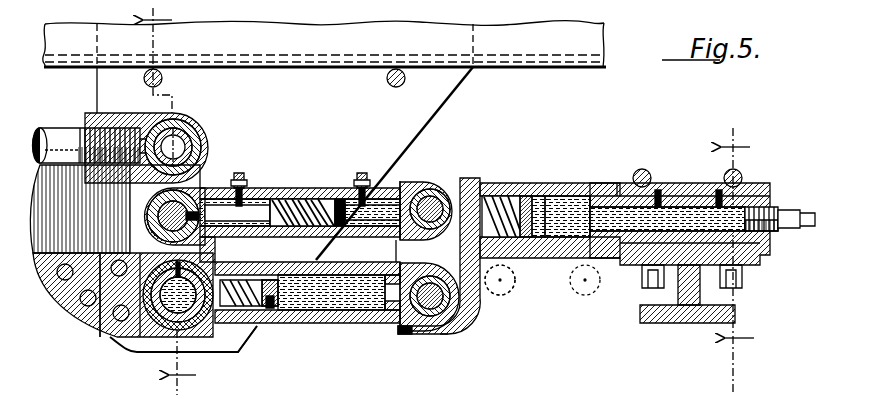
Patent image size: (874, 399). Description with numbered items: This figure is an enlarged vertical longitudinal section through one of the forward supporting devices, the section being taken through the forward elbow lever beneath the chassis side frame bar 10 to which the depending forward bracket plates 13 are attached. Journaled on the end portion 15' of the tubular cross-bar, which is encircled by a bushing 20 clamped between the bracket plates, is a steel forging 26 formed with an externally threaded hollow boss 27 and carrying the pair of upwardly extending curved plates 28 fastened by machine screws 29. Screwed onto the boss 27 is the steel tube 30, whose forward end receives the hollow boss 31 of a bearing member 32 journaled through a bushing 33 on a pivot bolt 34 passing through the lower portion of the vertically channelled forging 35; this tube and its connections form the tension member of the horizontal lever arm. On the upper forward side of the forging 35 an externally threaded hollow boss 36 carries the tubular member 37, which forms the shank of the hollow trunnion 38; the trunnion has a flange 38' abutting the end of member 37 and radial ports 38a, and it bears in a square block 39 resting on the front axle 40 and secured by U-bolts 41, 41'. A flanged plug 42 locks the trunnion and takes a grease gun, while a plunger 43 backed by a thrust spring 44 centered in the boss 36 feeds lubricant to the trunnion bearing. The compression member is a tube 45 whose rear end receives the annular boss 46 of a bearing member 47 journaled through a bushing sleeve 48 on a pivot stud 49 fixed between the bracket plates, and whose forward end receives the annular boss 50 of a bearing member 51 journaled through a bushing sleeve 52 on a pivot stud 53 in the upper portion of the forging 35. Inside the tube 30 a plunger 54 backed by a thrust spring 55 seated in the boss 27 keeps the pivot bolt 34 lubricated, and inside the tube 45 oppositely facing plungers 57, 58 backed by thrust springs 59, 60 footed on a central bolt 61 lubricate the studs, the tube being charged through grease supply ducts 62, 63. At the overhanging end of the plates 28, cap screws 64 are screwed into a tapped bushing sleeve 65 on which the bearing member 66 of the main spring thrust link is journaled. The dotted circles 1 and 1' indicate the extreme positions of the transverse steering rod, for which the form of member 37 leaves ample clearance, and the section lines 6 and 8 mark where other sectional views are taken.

The wire 1 is at (585, 301).
The wire 1' is at (518, 299).
The section line 6- 6 is at (169, 201).
The section line 8- 8 is at (737, 252).
The chassis side frame bar 10 is at (312, 68).
The forward bracket plates 13 is at (415, 116).
The end portions of the tubular cross-bar 15' is at (105, 315).
The bushings 20 is at (222, 340).
The steel forging 26 is at (150, 340).
The externally threaded hollow boss 27 is at (228, 232).
The upwardly extending curved plates 28 is at (42, 285).
The machine screws 29 is at (100, 322).
The steel tube 30 is at (328, 323).
The rearwardly extending hollow boss 31 is at (376, 323).
The bearing member 32 is at (416, 331).
The bushing 33 is at (450, 318).
The pivot bolt 34 is at (464, 312).
The vertically channelled forging 35 is at (482, 182).
The externally threaded hollow boss 36 is at (505, 258).
The tubular member 37 is at (576, 183).
The hollow trunnion 38 is at (680, 208).
The flange 38' is at (617, 174).
The radial ports 38a is at (667, 219).
The square block 39 is at (662, 190).
The front axle 40 is at (698, 323).
The U-bolts 41 is at (644, 157).
The pin 41' is at (758, 172).
The flanged plug 42 is at (790, 231).
The plunger 43 is at (524, 240).
The thrust spring 44 is at (528, 196).
The tube 45 is at (358, 188).
The annular boss 46 is at (226, 188).
The bearing member 47 is at (150, 208).
The bushing sleeve 48 is at (160, 218).
The pivot stud 49 is at (162, 230).
The annular boss 50 is at (408, 182).
The bearing member 51 is at (426, 185).
The bushing sleeve 52 is at (440, 200).
The pivot stud 53 is at (419, 249).
The plunger 54 is at (270, 325).
The thrust spring 55 is at (270, 277).
The plunger 57 is at (280, 188).
The plunger 58 is at (338, 199).
The thrust spring 59 is at (284, 275).
The thrust spring 60 is at (350, 226).
The bolt 61 is at (303, 199).
The grease supply duct 62 is at (252, 185).
The grease supply duct 63 is at (365, 170).
The cap screws 64 is at (188, 148).
The tapped bushing sleeve 65 is at (190, 118).
The bearing member 66 is at (106, 113).